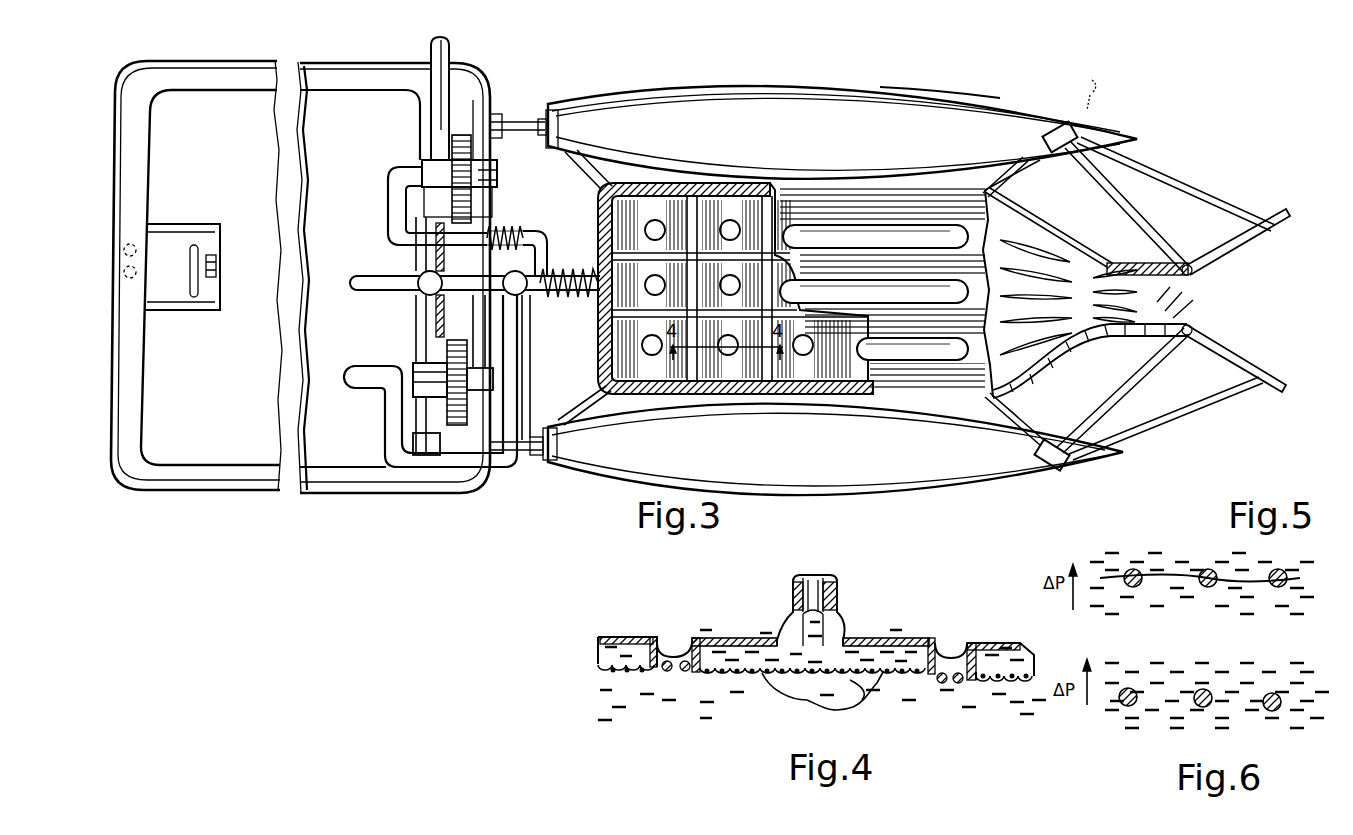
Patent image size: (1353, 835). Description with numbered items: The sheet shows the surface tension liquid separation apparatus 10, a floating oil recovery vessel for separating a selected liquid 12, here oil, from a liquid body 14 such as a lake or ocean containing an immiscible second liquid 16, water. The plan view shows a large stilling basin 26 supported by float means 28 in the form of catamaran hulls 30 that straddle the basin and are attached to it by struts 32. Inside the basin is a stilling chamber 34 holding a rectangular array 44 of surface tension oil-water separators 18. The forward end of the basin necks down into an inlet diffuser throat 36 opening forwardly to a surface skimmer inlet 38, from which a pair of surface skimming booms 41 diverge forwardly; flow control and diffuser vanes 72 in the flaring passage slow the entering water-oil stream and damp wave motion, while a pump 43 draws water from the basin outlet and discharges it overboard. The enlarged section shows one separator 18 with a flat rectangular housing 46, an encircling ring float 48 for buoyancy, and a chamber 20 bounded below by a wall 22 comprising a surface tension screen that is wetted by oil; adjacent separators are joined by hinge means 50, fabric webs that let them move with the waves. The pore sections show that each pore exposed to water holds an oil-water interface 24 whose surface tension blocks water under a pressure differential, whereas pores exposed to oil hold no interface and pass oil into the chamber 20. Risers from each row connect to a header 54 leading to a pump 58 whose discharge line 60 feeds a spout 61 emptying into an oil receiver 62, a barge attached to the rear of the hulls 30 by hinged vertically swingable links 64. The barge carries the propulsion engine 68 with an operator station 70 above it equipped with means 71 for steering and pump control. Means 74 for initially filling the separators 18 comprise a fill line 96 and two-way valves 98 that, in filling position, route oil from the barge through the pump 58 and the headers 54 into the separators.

In FIG. 3, the surface tension liquid separation apparatus 10 is at (1087, 104).
In FIG. 4, the selected liquid 12 is at (866, 682).
In FIG. 5, the selected liquid 12 is at (1298, 564).
In FIG. 6, the selected liquid 12 is at (1300, 715).
In FIG. 4, the liquid body 14 is at (1010, 716).
In FIG. 4, the second liquid 16 is at (990, 703).
In FIG. 5, the second liquid 16 is at (1320, 617).
In FIG. 3, the surface tension oil-water separator 18 is at (702, 368).
In FIG. 4, the surface tension oil-water separator 18 is at (893, 604).
In FIG. 4, the chamber 20 is at (777, 653).
In FIG. 4, the wall comprising a surface tension screen 22 is at (763, 676).
In FIG. 5, the oil-water interface 24 is at (1237, 573).
In FIG. 3, the stilling basin 26 is at (932, 398).
In FIG. 3, the float means 28 is at (915, 96).
In FIG. 3, the catamaran hull 30 is at (783, 100).
In FIG. 3, the strut 32 is at (582, 396).
In FIG. 3, the stilling chamber 34 is at (757, 380).
In FIG. 3, the inlet diffuser throat 36 is at (1120, 336).
In FIG. 3, the surface skimmer inlet 38 is at (1192, 316).
In FIG. 3, the surface skimming boom 41 is at (1262, 248).
In FIG. 3, the pump 43 is at (463, 212).
In FIG. 3, the array 44 is at (722, 183).
In FIG. 4, the housing 46 is at (943, 617).
In FIG. 4, the ring float 48 is at (681, 680).
In FIG. 4, the hinge means 50 is at (677, 645).
In FIG. 3, the header 54 is at (945, 280).
In FIG. 3, the pump 58 is at (456, 425).
In FIG. 3, the discharge line 60 is at (416, 332).
In FIG. 3, the spout 61 is at (352, 283).
In FIG. 3, the oil receiver 62 is at (376, 493).
In FIG. 3, the hinged vertically swingable link 64 is at (541, 110).
In FIG. 3, the propulsion engine 68 is at (168, 311).
In FIG. 3, the operator station 70 is at (185, 238).
In FIG. 3, the means for steering control 71 is at (214, 270).
In FIG. 3, the flow control and diffuser vane 72 is at (1108, 270).
In FIG. 3, the means for initially filling the separators 74 is at (398, 262).
In FIG. 3, the fill line 96 is at (461, 272).
In FIG. 3, the two-way valve 98 is at (410, 293).